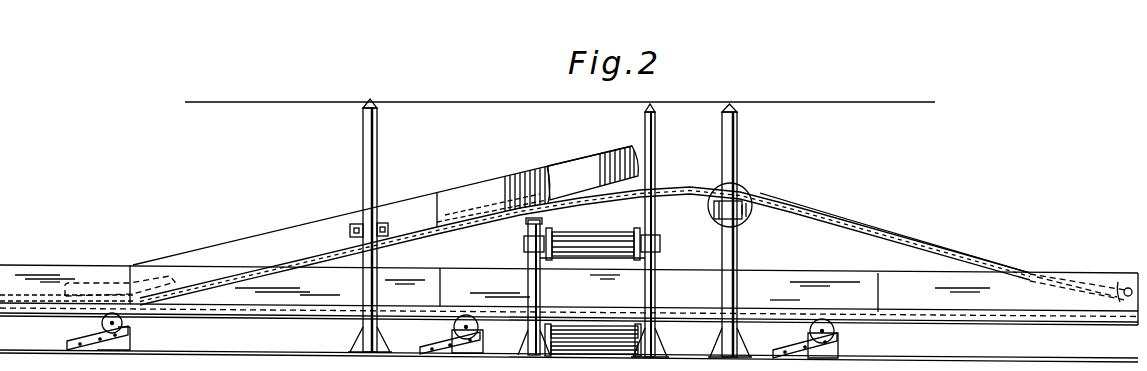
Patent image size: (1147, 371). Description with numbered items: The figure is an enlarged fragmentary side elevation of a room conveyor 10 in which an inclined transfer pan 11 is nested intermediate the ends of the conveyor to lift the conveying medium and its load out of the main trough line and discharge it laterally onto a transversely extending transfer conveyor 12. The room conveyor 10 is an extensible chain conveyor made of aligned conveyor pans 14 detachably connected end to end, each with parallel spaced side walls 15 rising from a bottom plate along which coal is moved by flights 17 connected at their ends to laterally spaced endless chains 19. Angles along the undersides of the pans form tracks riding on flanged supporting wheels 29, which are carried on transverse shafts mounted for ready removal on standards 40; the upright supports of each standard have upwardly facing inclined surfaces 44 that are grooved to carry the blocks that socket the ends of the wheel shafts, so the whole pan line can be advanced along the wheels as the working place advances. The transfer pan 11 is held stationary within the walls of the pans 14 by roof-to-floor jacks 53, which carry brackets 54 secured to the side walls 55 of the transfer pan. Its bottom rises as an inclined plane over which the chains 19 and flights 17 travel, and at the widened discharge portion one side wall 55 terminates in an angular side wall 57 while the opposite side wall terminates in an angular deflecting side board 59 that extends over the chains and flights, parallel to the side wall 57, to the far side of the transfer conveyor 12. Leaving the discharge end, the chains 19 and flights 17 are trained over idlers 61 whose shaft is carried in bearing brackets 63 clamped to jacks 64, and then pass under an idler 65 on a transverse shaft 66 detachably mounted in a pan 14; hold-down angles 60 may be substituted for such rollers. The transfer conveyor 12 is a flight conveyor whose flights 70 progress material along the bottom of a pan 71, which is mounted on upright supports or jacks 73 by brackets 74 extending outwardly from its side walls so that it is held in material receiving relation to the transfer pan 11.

The room conveyor 10 is at (36, 262).
The inclined transfer pan 11 is at (275, 214).
The transfer conveyor 12 is at (622, 221).
The conveyor pan 14 is at (432, 256).
The side wall 15 is at (898, 280).
The flight 17 is at (835, 208).
The endless chain 19 is at (870, 214).
The flanged supporting wheel 29 is at (124, 322).
The standard 40 is at (125, 340).
The inclined surface 44 is at (455, 333).
The jack 53 is at (363, 165).
The bracket 54 is at (380, 224).
The side wall 55 is at (213, 247).
The angular side wall 57 is at (470, 193).
The angular deflecting side board 59 is at (574, 163).
The hold-down angle 60 is at (98, 282).
The idler 61 is at (712, 212).
The bearing bracket 63 is at (740, 193).
The jack 64 is at (722, 145).
The idler 65 is at (1095, 280).
The transverse shaft 66 is at (1130, 288).
The flight 70 is at (590, 258).
The pan 71 is at (552, 235).
The upright support or jack 73 is at (528, 258).
The bracket 74 is at (530, 242).